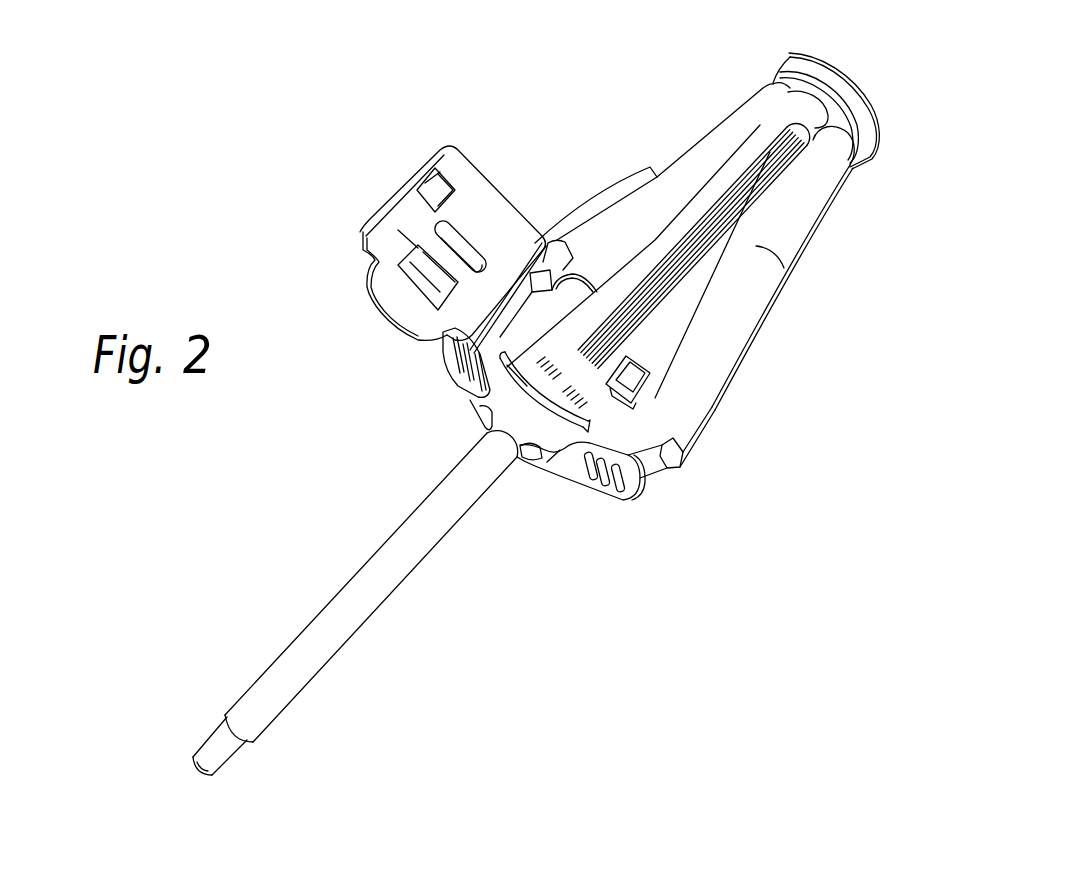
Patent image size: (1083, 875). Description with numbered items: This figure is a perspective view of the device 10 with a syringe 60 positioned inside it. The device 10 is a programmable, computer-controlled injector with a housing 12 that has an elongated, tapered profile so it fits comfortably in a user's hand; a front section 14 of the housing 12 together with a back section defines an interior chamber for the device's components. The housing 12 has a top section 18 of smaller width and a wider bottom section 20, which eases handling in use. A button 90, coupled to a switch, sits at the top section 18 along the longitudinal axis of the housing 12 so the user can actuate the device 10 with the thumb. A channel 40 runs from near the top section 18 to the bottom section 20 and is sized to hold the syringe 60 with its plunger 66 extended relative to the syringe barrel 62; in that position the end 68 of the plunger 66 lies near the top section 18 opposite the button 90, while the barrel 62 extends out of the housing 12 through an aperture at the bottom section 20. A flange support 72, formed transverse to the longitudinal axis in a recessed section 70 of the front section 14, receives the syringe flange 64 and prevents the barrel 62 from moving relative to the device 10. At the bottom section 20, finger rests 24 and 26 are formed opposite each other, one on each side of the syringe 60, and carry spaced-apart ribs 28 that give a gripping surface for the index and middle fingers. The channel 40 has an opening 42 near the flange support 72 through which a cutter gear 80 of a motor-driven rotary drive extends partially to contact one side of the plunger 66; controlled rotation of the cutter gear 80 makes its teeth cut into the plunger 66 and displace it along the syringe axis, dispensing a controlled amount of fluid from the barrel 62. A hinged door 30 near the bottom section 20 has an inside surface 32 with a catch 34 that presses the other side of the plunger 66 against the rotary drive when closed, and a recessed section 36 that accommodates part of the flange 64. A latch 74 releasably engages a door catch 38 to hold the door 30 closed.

The device 10 is at (818, 313).
The housing 12 is at (755, 340).
The front section 14 is at (650, 165).
The top section 18 is at (867, 150).
The bottom section 20 is at (598, 497).
The finger rest 24 is at (460, 382).
The finger rest 26 is at (617, 498).
The ribs 28 is at (583, 483).
The hinged door 30 is at (438, 158).
The inside surface 32 is at (398, 230).
The catch 34 is at (458, 230).
The recessed section 36 is at (422, 275).
The door catch 38 is at (442, 193).
The channel 40 is at (755, 153).
The opening 42 is at (580, 390).
The syringe 60 is at (390, 537).
The syringe barrel 62 is at (425, 560).
The syringe flange 64 is at (562, 425).
The plunger 66 is at (775, 172).
The end of the plunger 68 is at (820, 168).
The recessed section 70 is at (553, 349).
The flange support 72 is at (507, 382).
The latch 74 is at (645, 378).
The cutter gear 80 is at (523, 370).
The button 90 is at (847, 83).